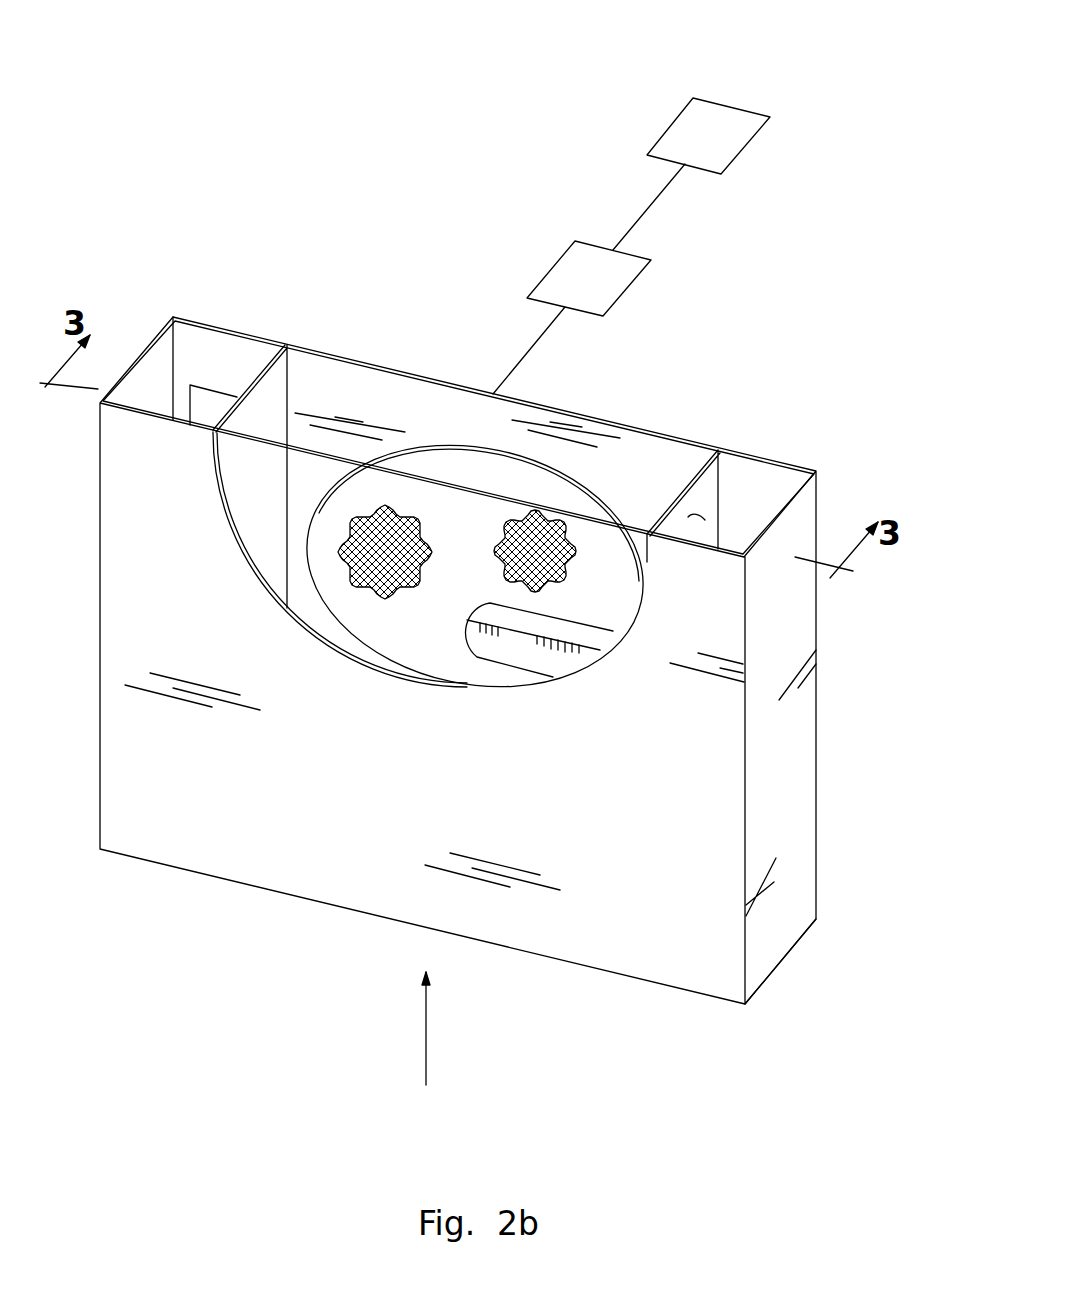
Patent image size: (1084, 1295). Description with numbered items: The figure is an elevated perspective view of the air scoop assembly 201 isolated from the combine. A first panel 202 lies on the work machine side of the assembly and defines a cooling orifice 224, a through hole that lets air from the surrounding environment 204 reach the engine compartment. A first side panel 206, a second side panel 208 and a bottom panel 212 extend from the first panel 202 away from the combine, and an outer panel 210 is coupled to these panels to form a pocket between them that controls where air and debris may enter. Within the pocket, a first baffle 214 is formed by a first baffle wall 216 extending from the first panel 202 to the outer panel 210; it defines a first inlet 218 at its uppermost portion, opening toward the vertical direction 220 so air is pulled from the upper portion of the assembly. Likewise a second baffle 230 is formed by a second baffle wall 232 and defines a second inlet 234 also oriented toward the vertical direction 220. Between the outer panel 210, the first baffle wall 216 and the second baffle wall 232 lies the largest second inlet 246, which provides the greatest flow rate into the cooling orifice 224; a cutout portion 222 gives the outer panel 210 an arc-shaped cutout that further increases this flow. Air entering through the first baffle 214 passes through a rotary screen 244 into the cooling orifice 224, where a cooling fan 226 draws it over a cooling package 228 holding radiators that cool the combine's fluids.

The air scoop assembly 201 is at (854, 115).
The first panel 202 is at (655, 490).
The surrounding environment 204 is at (245, 1001).
The first side panel 206 is at (792, 803).
The second side panel 208 is at (140, 383).
The outer panel 210 is at (622, 807).
The bottom panel 212 is at (772, 975).
The first baffle 214 is at (262, 405).
The first baffle wall 216 is at (278, 472).
The first inlet 218 is at (217, 362).
The vertical direction 220 is at (426, 1028).
The cutout portion 222 is at (250, 550).
The cooling orifice 224 is at (547, 468).
The cooling fan 226 is at (627, 293).
The cooling package 228 is at (672, 123).
The second baffle 230 is at (706, 487).
The second baffle wall 232 is at (688, 517).
The second inlet 234 is at (775, 495).
The rotary screen 244 is at (460, 480).
The second inlet 246 is at (415, 418).